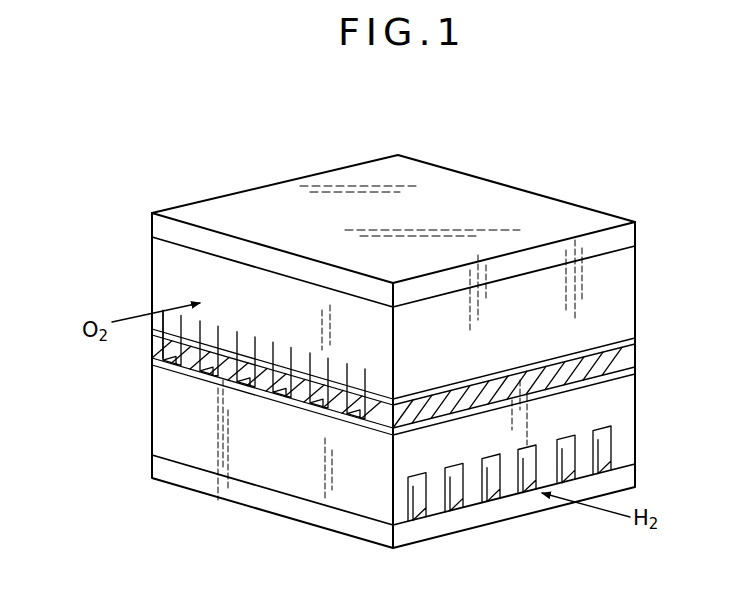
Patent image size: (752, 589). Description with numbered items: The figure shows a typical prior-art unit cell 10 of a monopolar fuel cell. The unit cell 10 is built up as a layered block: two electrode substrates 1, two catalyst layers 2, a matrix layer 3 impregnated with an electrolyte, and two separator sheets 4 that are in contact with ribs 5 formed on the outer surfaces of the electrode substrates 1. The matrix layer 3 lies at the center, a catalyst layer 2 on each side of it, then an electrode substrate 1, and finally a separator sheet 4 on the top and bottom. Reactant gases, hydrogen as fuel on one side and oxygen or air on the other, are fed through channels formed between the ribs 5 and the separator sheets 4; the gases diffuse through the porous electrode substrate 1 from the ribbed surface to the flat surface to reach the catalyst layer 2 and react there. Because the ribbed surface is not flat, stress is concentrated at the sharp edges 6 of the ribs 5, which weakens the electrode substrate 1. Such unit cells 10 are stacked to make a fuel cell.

The electrode substrate 1 is at (627, 285).
The catalyst layer 2 is at (630, 338).
The matrix layer 3 is at (630, 360).
The separator sheet 4 is at (627, 240).
The ribs 5 is at (230, 267).
The sharp edges 6 is at (170, 291).
The unit cell 10 is at (74, 217).